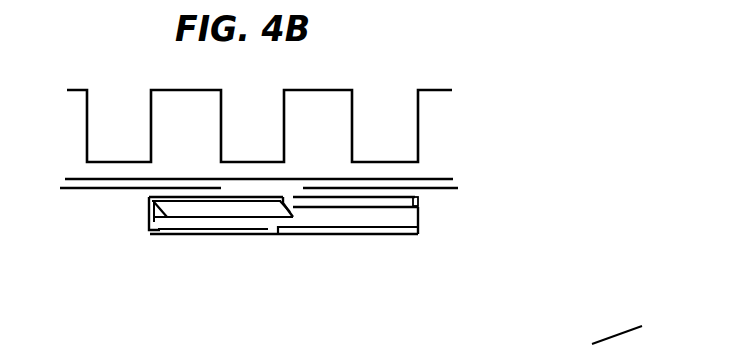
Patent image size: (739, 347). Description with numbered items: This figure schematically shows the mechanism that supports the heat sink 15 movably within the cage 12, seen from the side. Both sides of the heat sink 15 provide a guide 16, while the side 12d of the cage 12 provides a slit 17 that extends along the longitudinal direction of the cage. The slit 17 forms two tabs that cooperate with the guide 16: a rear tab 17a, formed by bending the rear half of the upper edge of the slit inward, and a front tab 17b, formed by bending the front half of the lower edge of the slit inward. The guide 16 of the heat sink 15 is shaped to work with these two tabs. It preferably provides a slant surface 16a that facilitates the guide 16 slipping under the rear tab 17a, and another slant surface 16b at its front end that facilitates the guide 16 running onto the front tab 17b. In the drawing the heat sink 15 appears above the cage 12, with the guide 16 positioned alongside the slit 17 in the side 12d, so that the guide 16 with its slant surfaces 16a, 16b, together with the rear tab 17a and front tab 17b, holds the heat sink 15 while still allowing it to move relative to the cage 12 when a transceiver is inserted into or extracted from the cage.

The heat sink 15 is at (352, 98).
The cage 12 is at (451, 180).
The side of the cage 12d is at (447, 218).
The guide 16 is at (197, 212).
The slant surface 16a is at (293, 214).
The slant surface 16b is at (150, 213).
The slit 17 is at (385, 234).
The rear tab 17a is at (390, 208).
The front tab 17b is at (208, 230).